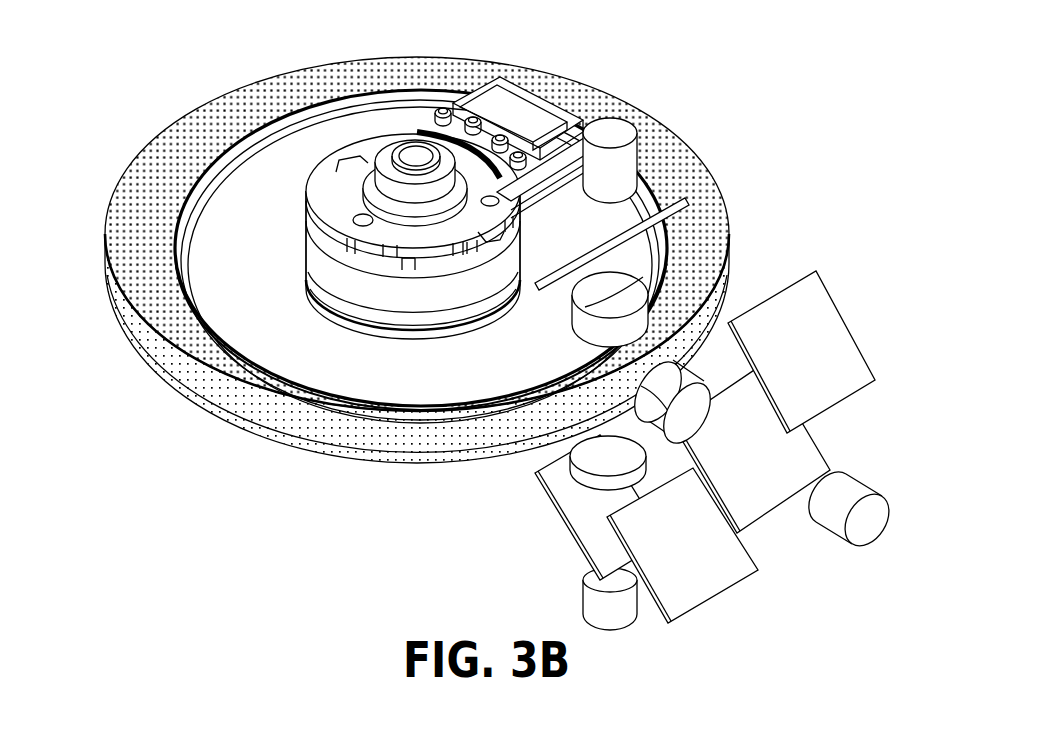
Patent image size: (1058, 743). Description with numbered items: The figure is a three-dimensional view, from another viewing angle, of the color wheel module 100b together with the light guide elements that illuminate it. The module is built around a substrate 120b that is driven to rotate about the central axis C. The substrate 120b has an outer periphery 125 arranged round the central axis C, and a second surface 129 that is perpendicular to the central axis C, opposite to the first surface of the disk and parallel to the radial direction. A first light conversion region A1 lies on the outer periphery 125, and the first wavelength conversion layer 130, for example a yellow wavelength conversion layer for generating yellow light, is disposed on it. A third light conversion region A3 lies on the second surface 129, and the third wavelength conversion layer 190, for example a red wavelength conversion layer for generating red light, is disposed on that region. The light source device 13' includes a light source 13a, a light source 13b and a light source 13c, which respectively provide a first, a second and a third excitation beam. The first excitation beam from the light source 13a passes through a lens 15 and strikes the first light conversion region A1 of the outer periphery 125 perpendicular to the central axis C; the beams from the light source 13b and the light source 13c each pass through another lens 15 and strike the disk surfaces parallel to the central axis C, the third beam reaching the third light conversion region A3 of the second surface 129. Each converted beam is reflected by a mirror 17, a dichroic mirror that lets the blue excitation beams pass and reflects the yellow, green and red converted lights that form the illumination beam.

The color wheel module 100b is at (186, 77).
The substrate 120b is at (352, 128).
The central axis C is at (416, 172).
The second surface 129 is at (585, 97).
The light source 13c is at (612, 130).
The third light conversion region A3 is at (663, 152).
The third wavelength conversion layer 190 is at (688, 177).
The mirror 17 is at (688, 203).
The lens 15 is at (650, 310).
The light source 13a is at (863, 527).
The light source 13b is at (595, 605).
The light source device 13' is at (737, 92).
The first wavelength conversion layer 130 is at (267, 428).
The first light conversion region A1 is at (350, 441).
The outer periphery 125 is at (404, 441).